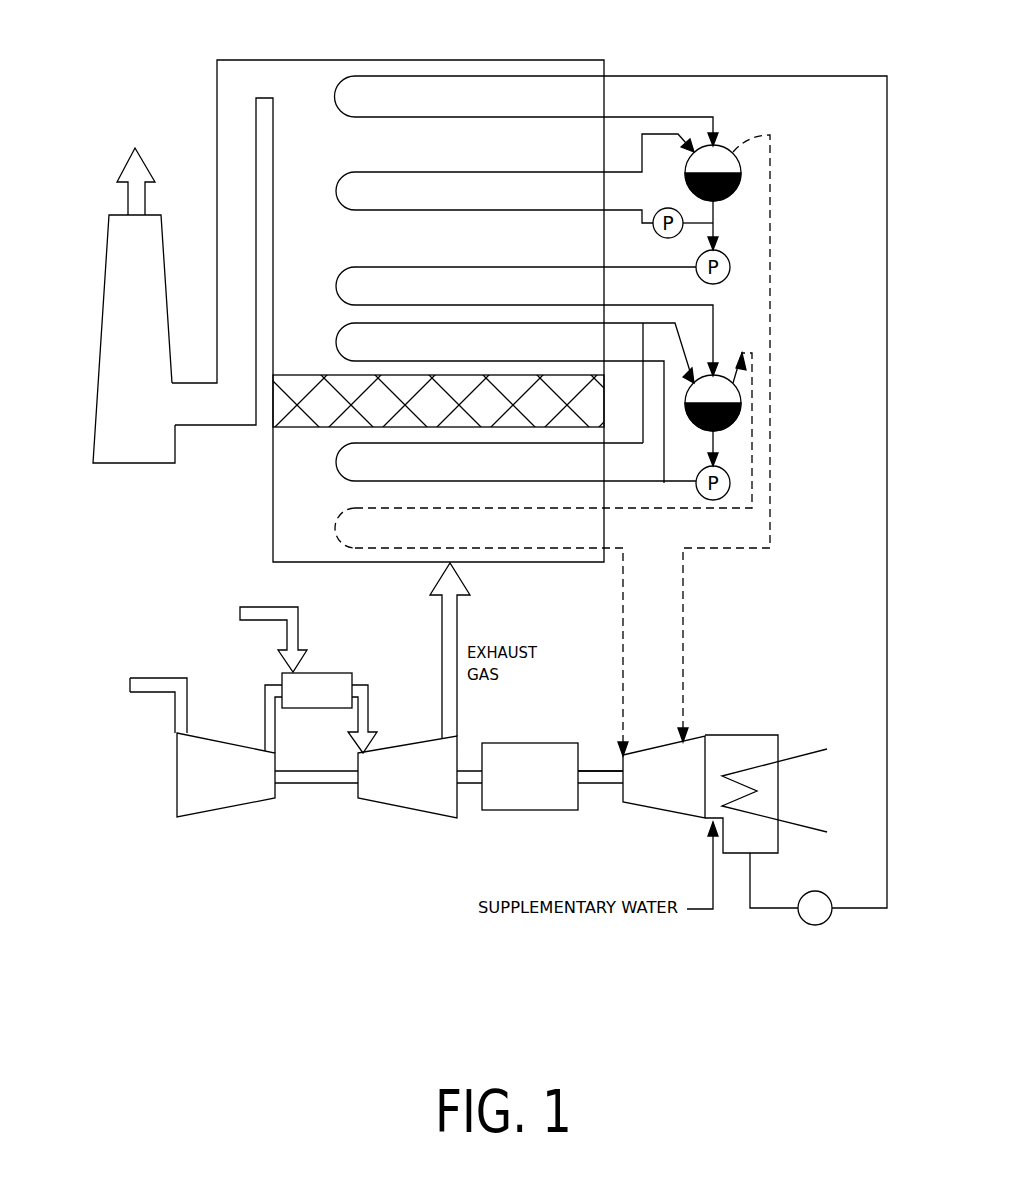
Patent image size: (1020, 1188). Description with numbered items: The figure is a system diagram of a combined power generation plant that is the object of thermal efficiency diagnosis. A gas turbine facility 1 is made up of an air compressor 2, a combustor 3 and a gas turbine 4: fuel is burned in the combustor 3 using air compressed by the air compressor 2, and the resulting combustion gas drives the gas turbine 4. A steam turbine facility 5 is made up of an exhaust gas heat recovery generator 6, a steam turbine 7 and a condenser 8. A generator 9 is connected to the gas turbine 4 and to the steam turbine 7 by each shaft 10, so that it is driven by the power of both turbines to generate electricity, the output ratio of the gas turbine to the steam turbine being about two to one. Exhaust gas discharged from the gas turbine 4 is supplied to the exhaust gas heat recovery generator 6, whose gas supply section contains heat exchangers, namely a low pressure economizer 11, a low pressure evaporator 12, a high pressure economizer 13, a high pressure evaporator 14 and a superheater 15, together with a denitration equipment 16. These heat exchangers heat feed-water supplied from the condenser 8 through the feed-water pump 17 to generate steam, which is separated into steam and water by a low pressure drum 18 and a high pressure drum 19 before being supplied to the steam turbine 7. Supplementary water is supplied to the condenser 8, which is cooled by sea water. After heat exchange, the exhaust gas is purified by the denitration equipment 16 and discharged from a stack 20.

The gas turbine facility 1 is at (335, 866).
The air compressor 2 is at (228, 808).
The combustor 3 is at (332, 671).
The gas turbine 4 is at (403, 808).
The steam turbine facility 5 is at (725, 940).
The exhaust gas heat recovery generator 6 is at (253, 55).
The steam turbine 7 is at (660, 812).
The condenser 8 is at (778, 798).
The generator 9 is at (530, 810).
The shaft 10 is at (603, 770).
The low pressure economizer 11 is at (610, 492).
The low pressure evaporator 12 is at (515, 178).
The high pressure economizer 13 is at (527, 321).
The high pressure evaporator 14 is at (516, 402).
The superheater 15 is at (543, 554).
The denitration equipment 16 is at (298, 418).
The feed-water pump 17 is at (815, 925).
The low pressure drum 18 is at (759, 414).
The high pressure drum 19 is at (737, 381).
The stack 20 is at (158, 253).